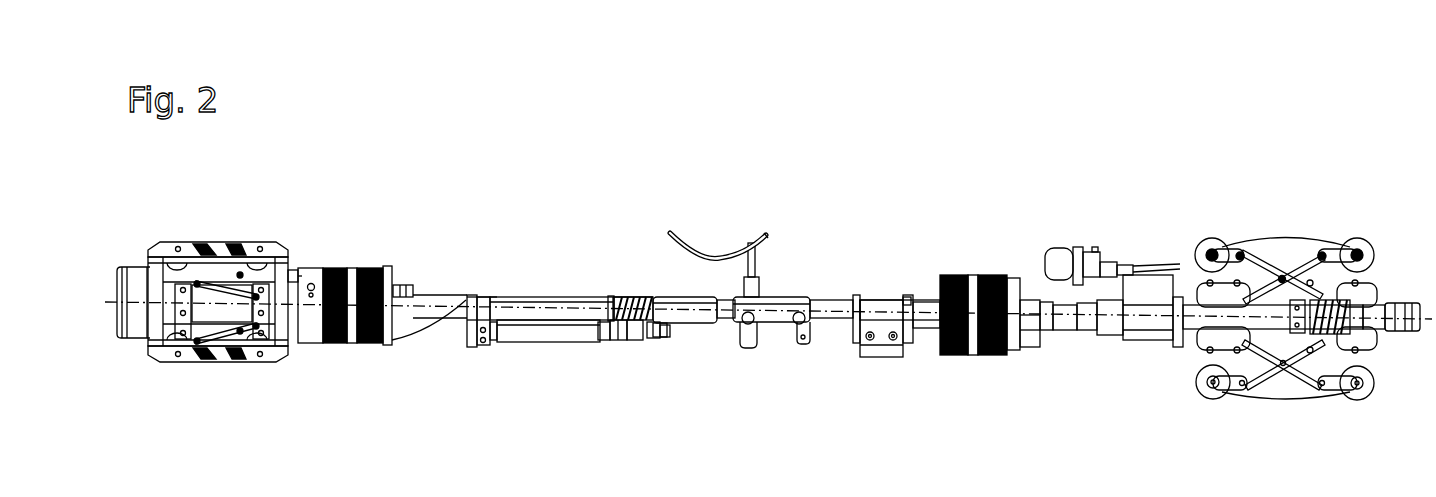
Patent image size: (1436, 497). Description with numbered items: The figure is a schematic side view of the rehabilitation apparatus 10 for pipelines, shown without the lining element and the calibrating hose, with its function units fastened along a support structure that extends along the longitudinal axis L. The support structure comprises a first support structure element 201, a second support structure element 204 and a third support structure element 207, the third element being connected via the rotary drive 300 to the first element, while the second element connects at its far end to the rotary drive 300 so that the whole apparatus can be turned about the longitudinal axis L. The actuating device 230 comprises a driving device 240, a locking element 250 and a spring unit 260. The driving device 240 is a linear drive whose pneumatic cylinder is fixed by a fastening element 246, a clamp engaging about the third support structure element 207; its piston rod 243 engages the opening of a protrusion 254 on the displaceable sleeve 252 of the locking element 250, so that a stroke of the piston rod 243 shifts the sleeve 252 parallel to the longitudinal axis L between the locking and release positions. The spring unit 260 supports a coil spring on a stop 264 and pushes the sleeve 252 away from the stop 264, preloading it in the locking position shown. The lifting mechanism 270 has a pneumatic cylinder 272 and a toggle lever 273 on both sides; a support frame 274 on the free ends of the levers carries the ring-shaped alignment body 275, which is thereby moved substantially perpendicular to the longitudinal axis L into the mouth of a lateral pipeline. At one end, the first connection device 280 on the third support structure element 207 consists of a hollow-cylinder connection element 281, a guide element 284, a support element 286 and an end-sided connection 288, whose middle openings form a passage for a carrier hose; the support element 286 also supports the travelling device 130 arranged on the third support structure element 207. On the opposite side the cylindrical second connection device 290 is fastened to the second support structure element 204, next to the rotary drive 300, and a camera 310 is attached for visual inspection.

The pipe inspection device 10 is at (1253, 206).
The travelling device 130 is at (175, 228).
The first support structure element 201 is at (620, 294).
The second support structure element 204 is at (737, 296).
The third support structure element 207 is at (497, 294).
The actuating device 230 is at (571, 385).
The driving device 240 is at (507, 346).
The piston rod 243 is at (640, 345).
The fastening element 246 is at (475, 345).
The locking element 250 is at (690, 335).
The sleeve 252 is at (677, 345).
The protrusion 254 is at (660, 345).
The spring unit 260 is at (636, 290).
The stop 264 is at (612, 297).
The lifting mechanism 270 is at (775, 304).
The pneumatic cylinder 272 is at (843, 352).
The toggle lever 273 is at (780, 332).
The support frame 274 is at (757, 288).
The alignment body 275 is at (772, 232).
The first connection device 280 is at (368, 190).
The connection element 281 is at (342, 348).
The guide element 284 is at (413, 345).
The support element 286 is at (280, 297).
The connection 288 is at (137, 262).
The second connection device 290 is at (965, 270).
The rotary drive 300 is at (1122, 358).
The camera 310 is at (1063, 248).
The longitudinal axis L is at (115, 307).